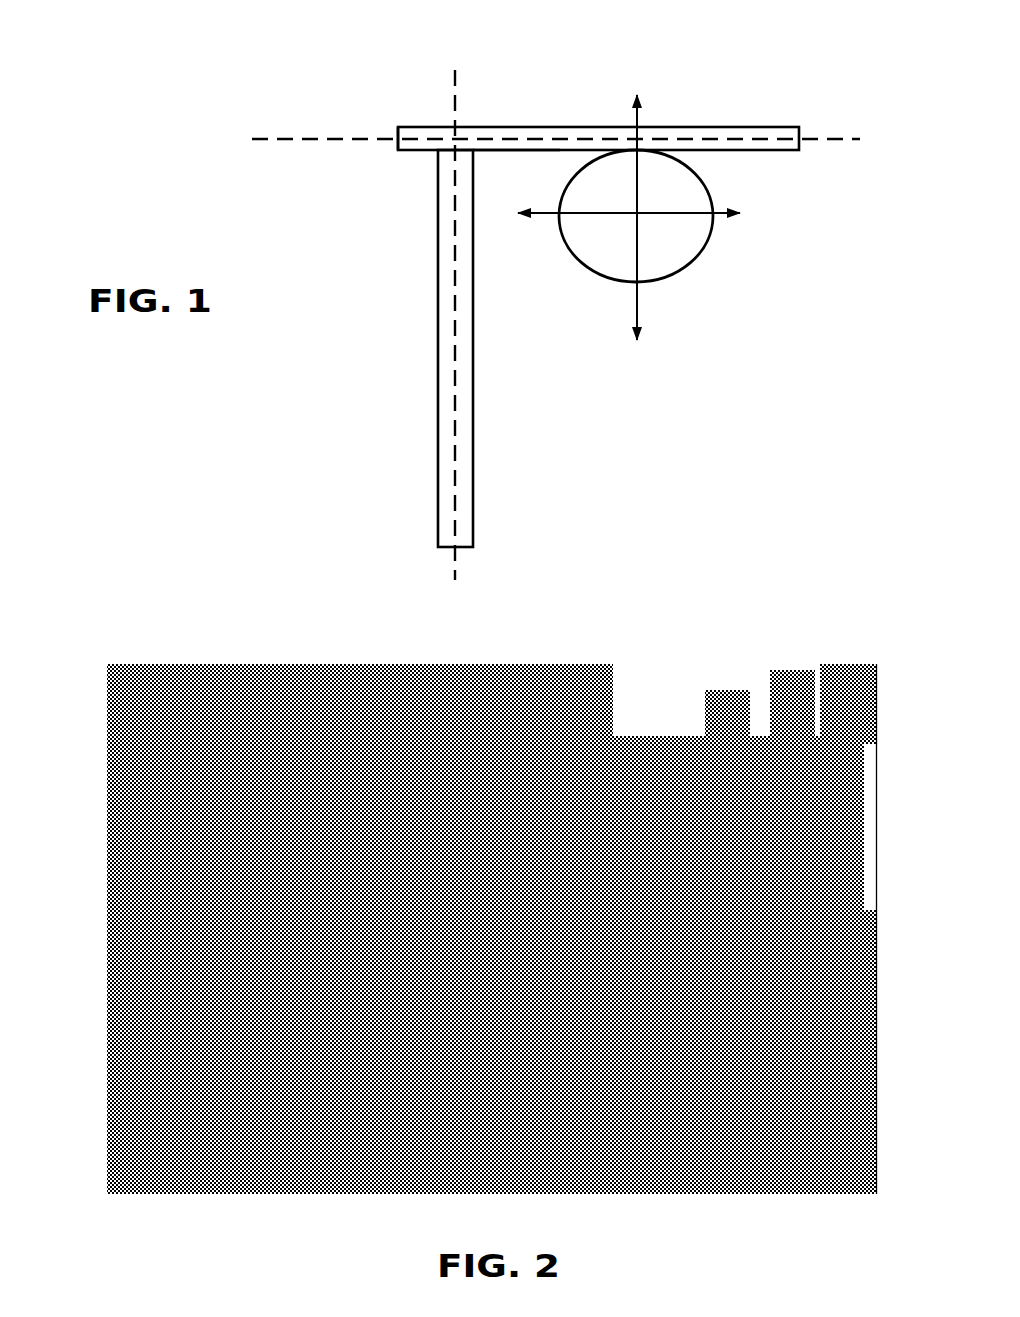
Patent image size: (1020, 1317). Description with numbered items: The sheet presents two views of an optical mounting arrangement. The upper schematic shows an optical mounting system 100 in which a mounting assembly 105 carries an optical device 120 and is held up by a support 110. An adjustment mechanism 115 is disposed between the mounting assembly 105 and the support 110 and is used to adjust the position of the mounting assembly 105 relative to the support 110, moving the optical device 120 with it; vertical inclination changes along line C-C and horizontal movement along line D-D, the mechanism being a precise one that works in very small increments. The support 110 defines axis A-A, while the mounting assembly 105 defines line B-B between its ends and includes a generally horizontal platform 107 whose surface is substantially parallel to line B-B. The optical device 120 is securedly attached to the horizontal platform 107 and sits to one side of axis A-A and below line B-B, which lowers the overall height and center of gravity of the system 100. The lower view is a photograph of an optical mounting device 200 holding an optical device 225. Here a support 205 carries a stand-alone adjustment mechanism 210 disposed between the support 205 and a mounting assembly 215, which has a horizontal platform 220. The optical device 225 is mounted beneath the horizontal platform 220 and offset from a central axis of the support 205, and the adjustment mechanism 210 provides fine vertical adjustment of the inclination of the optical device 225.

In FIG. 1, the optical mounting system 100 is at (180, 86).
In FIG. 1, the mounting assembly 105 is at (680, 126).
In FIG. 1, the horizontal platform 107 is at (518, 94).
In FIG. 1, the support 110 is at (438, 389).
In FIG. 1, the adjustment mechanism 115 is at (370, 126).
In FIG. 1, the optical device 120 is at (697, 254).
In FIG. 2, the optical mounting device 200 is at (222, 574).
In FIG. 2, the support 205 is at (363, 1182).
In FIG. 2, the adjustment mechanism 210 is at (204, 840).
In FIG. 2, the mounting assembly 215 is at (342, 676).
In FIG. 2, the horizontal platform 220 is at (433, 690).
In FIG. 2, the optical device 225 is at (628, 720).